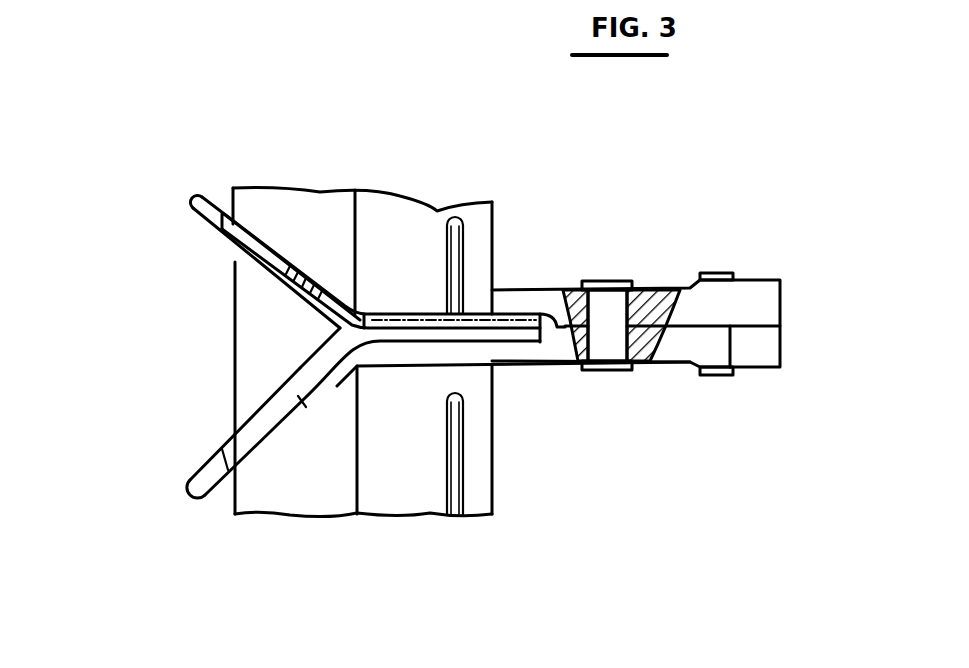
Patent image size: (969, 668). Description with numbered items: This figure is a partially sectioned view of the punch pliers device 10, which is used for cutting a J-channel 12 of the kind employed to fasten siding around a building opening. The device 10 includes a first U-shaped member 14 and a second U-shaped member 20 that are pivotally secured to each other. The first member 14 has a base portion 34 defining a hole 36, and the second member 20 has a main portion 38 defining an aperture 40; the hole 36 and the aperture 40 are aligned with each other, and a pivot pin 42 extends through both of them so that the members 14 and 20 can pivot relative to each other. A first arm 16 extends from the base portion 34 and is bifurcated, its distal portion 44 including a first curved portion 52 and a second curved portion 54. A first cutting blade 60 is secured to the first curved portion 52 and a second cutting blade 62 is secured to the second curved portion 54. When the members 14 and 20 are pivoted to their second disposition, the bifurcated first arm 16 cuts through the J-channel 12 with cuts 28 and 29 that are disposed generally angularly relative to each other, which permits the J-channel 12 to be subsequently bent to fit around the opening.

The punch pliers device 10 is at (680, 308).
The J-channel 12 is at (390, 453).
The first U-shaped member 14 is at (446, 266).
The first arm 16 is at (405, 325).
The second U-shaped member 20 is at (508, 295).
The cut 28 is at (272, 282).
The cut 29 is at (263, 395).
The base portion 34 is at (707, 348).
The hole 36 is at (630, 345).
The main portion 38 is at (738, 298).
The aperture 40 is at (633, 300).
The pivot pin 42 is at (608, 302).
The distal portion 44 is at (206, 182).
The first curved portion 52 is at (222, 428).
The second curved portion 54 is at (272, 243).
The first cutting blade 60 is at (230, 445).
The second cutting blade 62 is at (233, 264).